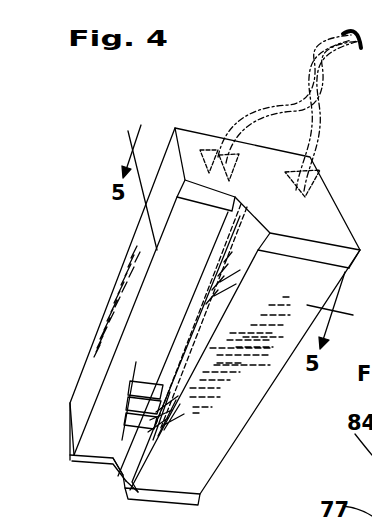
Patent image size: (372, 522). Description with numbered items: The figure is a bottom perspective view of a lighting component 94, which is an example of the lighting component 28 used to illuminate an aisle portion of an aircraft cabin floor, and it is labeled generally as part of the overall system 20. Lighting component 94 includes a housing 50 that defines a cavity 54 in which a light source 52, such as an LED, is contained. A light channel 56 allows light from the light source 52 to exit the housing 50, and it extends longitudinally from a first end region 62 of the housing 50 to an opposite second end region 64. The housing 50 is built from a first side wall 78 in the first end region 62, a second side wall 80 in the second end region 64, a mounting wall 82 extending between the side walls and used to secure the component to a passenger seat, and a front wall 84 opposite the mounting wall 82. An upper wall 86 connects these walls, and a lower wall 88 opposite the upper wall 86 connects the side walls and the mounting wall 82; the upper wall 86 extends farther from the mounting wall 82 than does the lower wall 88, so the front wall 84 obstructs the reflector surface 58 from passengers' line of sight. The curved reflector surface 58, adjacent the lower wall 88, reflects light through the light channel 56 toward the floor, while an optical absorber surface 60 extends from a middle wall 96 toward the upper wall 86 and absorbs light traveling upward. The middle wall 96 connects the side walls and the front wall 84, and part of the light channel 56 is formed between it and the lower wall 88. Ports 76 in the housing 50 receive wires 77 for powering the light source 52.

The fluid delivery system 20 is at (246, 6).
The lighting component 28 is at (73, 205).
The housing 50 is at (335, 233).
The light source 52 is at (188, 338).
The cavity 54 is at (222, 255).
The light channel 56 is at (130, 460).
The reflector surface 58 is at (153, 427).
The optical absorber surface 60 is at (152, 392).
The first end region 62 is at (88, 494).
The second end region 64 is at (295, 122).
The ports 76 is at (208, 150).
The wires 77 is at (339, 58).
The first side wall 78 is at (115, 466).
The second side wall 80 is at (263, 163).
The mounting wall 82 is at (313, 270).
The front wall 84 is at (112, 323).
The upper wall 86 is at (97, 387).
The lower wall 88 is at (243, 421).
The lighting component 94 is at (76, 247).
The middle wall 96 is at (181, 294).